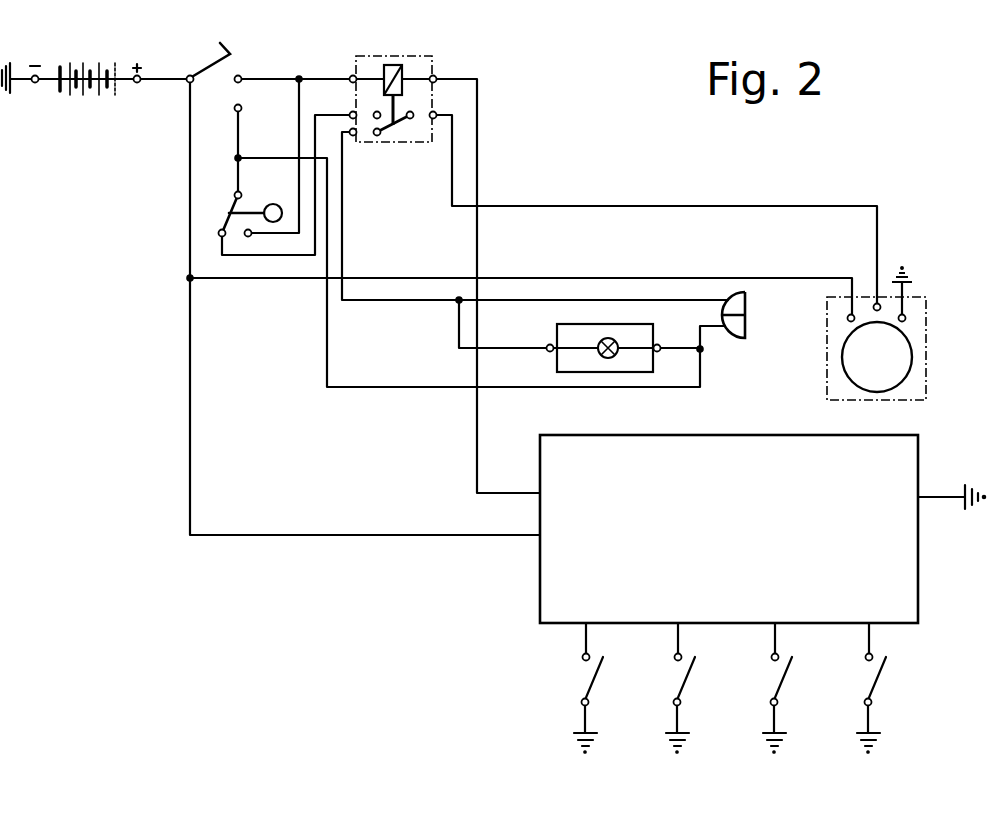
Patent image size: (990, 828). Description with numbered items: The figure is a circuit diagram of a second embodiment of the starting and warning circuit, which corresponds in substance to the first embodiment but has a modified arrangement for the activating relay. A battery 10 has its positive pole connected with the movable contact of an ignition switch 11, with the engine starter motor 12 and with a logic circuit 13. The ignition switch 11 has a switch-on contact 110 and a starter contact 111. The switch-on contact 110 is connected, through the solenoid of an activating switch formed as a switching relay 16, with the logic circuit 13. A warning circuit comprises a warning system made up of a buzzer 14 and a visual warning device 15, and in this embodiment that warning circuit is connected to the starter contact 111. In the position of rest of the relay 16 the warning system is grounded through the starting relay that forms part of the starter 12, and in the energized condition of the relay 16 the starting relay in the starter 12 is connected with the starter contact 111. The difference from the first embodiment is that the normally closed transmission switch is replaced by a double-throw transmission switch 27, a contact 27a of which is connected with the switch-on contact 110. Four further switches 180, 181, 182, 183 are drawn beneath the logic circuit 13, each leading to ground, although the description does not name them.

The battery 10 is at (93, 65).
The ignition switch 11 is at (213, 62).
The switch-on contact 110 is at (240, 76).
The starter contact 111 is at (241, 110).
The double-throw transmission switch 27 is at (229, 205).
The contact of the transmission switch 27a is at (249, 237).
The switching relay 16 is at (434, 61).
The visual warning device 15 is at (557, 332).
The buzzer 14 is at (748, 320).
The engine starter motor 12 is at (927, 325).
The logic circuit 13 is at (905, 561).
The door switch 180 is at (600, 674).
The door switch 181 is at (690, 674).
The door switch 182 is at (790, 674).
The door switch 183 is at (884, 674).